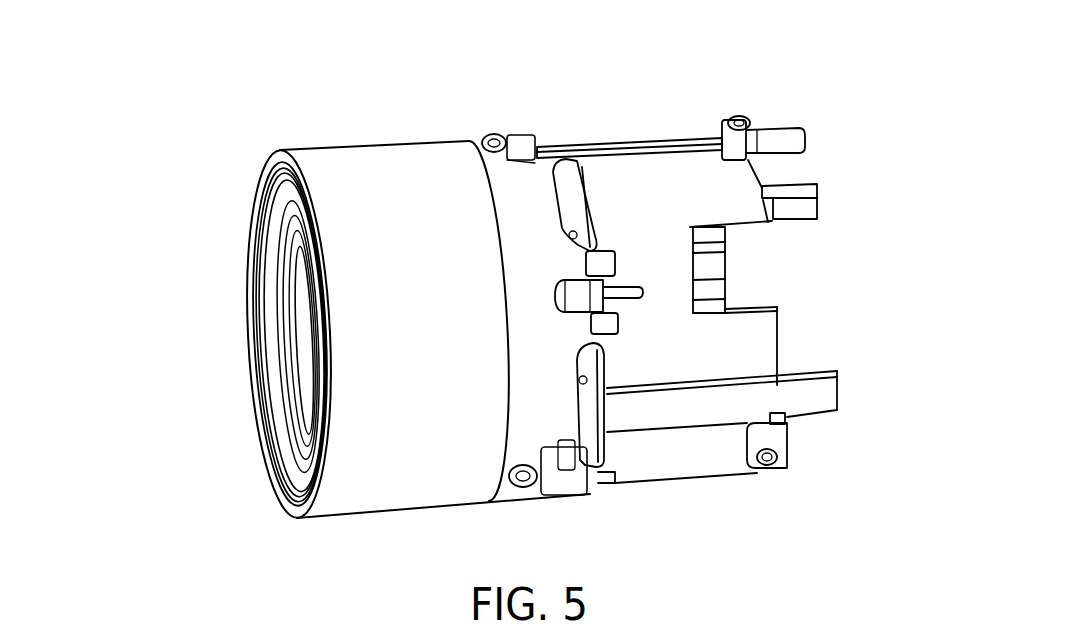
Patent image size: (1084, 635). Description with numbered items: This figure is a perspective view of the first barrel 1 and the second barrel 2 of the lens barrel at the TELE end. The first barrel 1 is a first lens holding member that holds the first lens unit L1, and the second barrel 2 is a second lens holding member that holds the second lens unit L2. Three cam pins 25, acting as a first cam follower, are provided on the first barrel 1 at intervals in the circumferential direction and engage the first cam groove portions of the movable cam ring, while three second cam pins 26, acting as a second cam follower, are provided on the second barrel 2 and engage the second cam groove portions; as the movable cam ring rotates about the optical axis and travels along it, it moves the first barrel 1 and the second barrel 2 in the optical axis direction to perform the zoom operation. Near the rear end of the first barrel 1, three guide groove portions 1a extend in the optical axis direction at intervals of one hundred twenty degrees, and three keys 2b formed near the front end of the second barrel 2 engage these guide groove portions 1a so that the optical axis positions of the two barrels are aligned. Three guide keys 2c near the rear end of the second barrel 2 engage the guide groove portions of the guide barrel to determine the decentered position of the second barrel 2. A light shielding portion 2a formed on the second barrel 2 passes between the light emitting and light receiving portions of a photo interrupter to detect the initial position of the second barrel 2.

The first barrel 1 is at (350, 147).
The guide groove portions 1a is at (578, 257).
The second barrel 2 is at (642, 138).
The light shielding portion 2a is at (817, 203).
The keys 2b is at (602, 292).
The guide keys 2c is at (728, 121).
The cam pins 25 is at (493, 133).
The second cam pins 26 is at (740, 117).
The first lens unit L1 is at (297, 322).
The second lens unit L2 is at (576, 299).